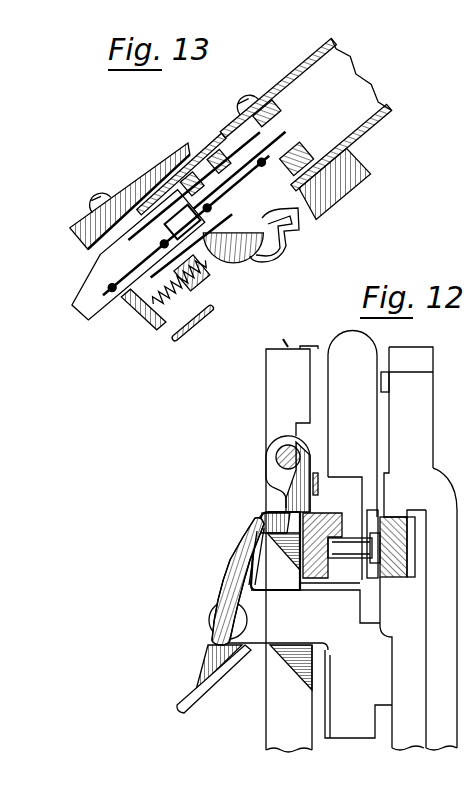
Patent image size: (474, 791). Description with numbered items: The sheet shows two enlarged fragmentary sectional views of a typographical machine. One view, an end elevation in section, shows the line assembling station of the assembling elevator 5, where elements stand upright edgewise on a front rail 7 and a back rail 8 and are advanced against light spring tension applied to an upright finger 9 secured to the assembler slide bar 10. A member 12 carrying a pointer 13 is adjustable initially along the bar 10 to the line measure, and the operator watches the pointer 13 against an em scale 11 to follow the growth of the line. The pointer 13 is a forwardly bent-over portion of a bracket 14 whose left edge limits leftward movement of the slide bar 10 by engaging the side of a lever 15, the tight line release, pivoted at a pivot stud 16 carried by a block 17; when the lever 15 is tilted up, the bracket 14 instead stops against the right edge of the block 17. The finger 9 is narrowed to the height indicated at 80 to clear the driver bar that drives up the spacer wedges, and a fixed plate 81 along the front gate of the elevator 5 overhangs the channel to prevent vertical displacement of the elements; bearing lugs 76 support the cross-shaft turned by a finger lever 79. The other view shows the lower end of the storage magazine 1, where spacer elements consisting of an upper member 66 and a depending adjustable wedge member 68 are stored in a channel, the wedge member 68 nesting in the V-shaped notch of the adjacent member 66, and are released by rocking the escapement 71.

In FIG. 13, the element storage magazine 1 is at (381, 113).
In FIG. 12, the assembling elevator 5 is at (437, 660).
In FIG. 12, the front rail 7 is at (315, 472).
In FIG. 12, the back rail 8 is at (384, 472).
In FIG. 12, the upright finger 9 is at (366, 351).
In FIG. 12, the assembler slide bar 10 is at (390, 582).
In FIG. 12, the em scale 11 is at (243, 553).
In FIG. 12, the member 12 is at (338, 514).
In FIG. 12, the pointer 13 is at (253, 530).
In FIG. 12, the bracket 14 is at (311, 516).
In FIG. 12, the lever 15 is at (230, 573).
In FIG. 12, the pivot stud 16 is at (283, 452).
In FIG. 12, the block 17 is at (270, 486).
In FIG. 13, the upper member 66 is at (132, 304).
In FIG. 13, the adjustable wedge member 68 is at (84, 302).
In FIG. 13, the escapement 71 is at (256, 263).
In FIG. 12, the bearing lugs 76 is at (257, 643).
In FIG. 12, the finger lever 79 is at (193, 677).
In FIG. 12, the cut out 80 is at (340, 477).
In FIG. 12, the fixed plate 81 is at (304, 349).